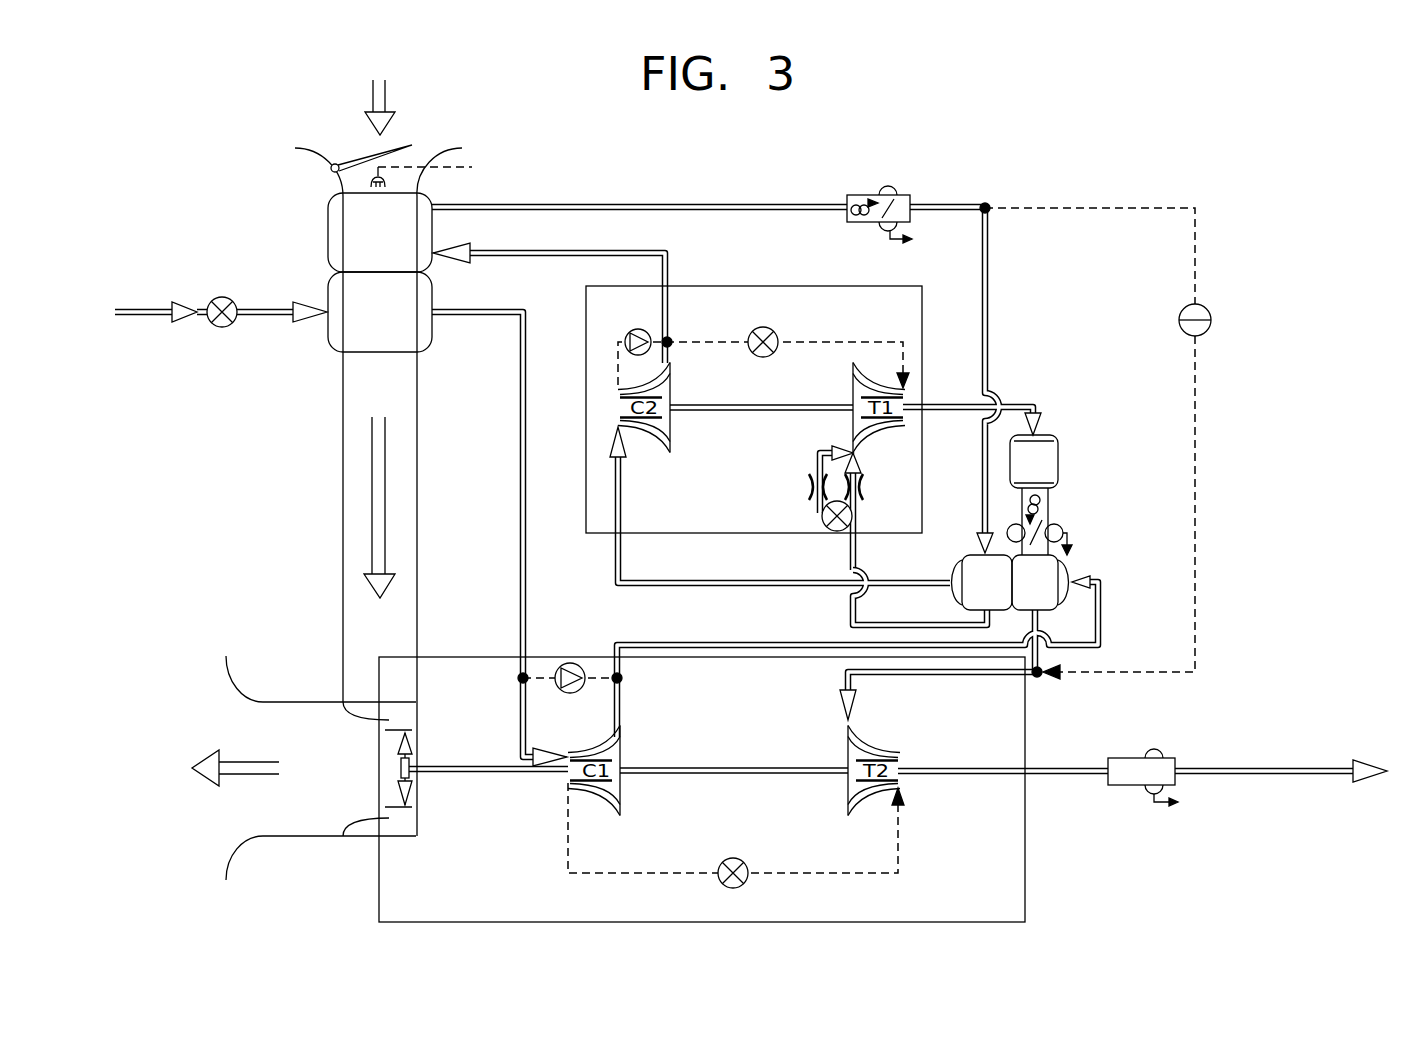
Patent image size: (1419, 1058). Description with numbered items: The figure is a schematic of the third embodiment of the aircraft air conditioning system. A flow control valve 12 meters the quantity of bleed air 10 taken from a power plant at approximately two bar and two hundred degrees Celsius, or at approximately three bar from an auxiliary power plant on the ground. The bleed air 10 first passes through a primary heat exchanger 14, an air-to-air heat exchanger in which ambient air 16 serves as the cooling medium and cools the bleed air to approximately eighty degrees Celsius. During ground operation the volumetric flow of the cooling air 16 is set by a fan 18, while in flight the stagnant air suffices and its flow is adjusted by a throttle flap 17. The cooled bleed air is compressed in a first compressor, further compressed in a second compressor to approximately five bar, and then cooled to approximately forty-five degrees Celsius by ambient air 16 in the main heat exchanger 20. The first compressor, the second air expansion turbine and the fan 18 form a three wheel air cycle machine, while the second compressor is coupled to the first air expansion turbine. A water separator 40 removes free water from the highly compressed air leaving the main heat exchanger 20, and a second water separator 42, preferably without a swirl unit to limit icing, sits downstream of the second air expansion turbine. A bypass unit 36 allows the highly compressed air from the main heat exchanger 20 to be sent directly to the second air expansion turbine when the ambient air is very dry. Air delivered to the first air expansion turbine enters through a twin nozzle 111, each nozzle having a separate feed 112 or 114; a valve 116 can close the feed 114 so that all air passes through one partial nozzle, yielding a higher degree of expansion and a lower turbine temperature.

The bleed air 10 is at (139, 296).
The flow control valve 12 is at (222, 328).
The primary heat exchanger 14 is at (338, 337).
The ambient air 16 is at (388, 92).
The throttle flap 17 is at (348, 158).
The fan 18 is at (400, 776).
The main heat exchanger 20 is at (333, 232).
The bypass unit 36 is at (1195, 455).
The water separator 40 is at (860, 196).
The water separator 42 is at (1123, 778).
The twin nozzle 111 is at (870, 490).
The feed 112 is at (860, 508).
The feed 114 is at (818, 503).
The valve 116 is at (838, 528).